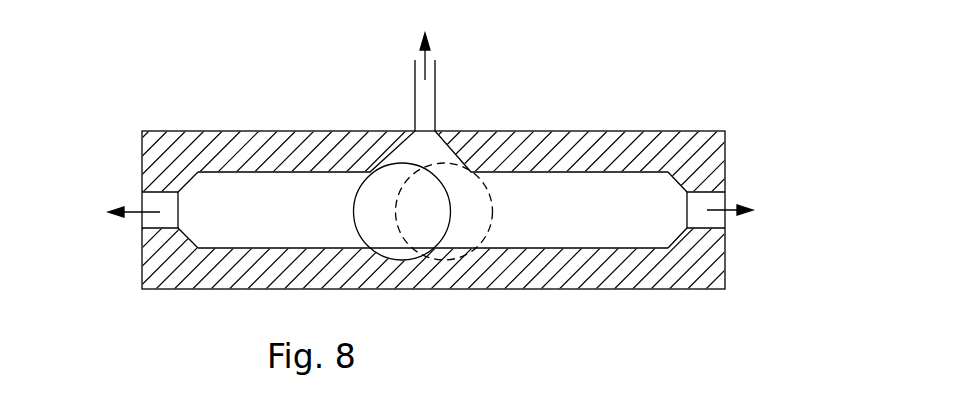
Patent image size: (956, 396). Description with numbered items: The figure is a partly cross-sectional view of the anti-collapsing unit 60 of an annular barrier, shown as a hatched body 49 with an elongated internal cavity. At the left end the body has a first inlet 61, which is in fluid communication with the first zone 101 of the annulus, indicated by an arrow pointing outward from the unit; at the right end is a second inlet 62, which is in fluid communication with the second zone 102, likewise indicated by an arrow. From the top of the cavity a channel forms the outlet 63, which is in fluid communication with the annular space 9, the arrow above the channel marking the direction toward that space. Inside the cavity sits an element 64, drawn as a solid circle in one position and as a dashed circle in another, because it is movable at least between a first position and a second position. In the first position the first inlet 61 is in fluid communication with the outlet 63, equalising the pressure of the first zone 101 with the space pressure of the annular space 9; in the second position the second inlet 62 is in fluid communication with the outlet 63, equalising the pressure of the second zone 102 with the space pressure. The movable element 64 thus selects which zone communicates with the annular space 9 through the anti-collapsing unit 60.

The annular space 9 is at (426, 40).
The valve body 49 is at (160, 150).
The anti-collapsing unit 60 is at (695, 150).
The first inlet 61 is at (160, 220).
The second inlet 62 is at (712, 215).
The outlet 63 is at (428, 145).
The element 64 is at (430, 240).
The first zone 101 is at (110, 198).
The second zone 102 is at (755, 197).